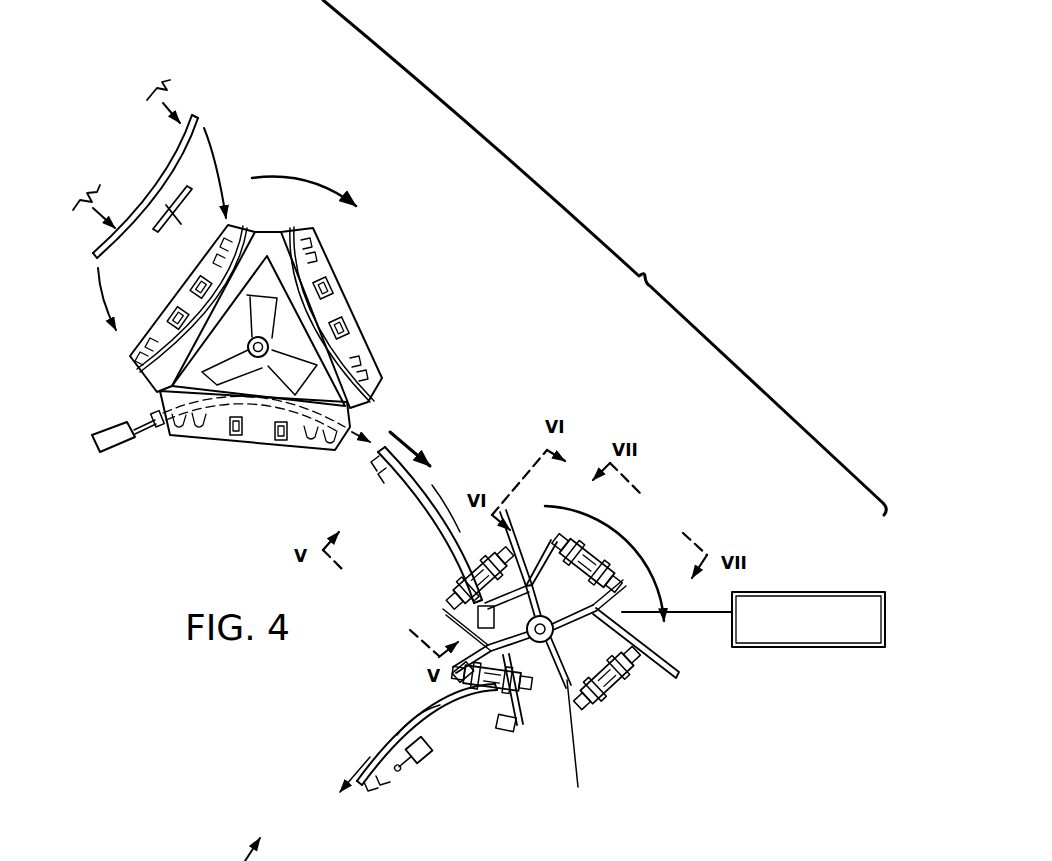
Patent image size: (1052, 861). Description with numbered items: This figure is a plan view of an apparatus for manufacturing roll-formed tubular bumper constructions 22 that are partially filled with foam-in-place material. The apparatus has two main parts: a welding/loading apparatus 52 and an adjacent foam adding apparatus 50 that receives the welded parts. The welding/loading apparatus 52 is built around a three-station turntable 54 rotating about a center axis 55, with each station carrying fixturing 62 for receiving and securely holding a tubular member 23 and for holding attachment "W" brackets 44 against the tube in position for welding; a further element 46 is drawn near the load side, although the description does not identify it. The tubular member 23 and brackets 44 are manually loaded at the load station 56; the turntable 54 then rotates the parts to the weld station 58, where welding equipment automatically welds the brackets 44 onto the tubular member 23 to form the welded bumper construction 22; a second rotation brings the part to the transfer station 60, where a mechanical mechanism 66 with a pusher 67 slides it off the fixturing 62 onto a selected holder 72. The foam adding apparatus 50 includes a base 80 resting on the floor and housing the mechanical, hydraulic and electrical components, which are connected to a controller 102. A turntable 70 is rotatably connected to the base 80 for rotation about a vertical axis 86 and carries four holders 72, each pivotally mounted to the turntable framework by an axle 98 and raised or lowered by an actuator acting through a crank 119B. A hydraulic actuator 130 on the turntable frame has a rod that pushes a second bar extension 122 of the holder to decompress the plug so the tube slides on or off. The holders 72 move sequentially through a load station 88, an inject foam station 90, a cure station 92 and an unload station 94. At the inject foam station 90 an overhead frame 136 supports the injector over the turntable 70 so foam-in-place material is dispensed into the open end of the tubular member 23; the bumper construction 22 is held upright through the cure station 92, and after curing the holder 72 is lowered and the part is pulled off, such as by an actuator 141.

The tubular bumper construction 22 is at (380, 477).
The tubular member 23 is at (202, 117).
The attachment "W" brackets 44 is at (160, 82).
The rail section 46 is at (188, 200).
The foam adding apparatus 50 is at (672, 482).
The welding/loading apparatus 52 is at (371, 171).
The three-station turntable 54 is at (380, 363).
The center axis 55 is at (255, 342).
The load station 56 is at (107, 133).
The weld station 58 is at (440, 298).
The transfer station 60 is at (254, 492).
The fixturing 62 is at (196, 275).
The mechanical mechanism 66 is at (113, 455).
The pusher 67 is at (148, 418).
The turntable 70 is at (604, 404).
The holder 72 is at (585, 556).
The base 80 is at (460, 628).
The vertical axis 86 is at (566, 622).
The load station 88 is at (398, 551).
The inject foam station 90 is at (752, 515).
The cure station 92 is at (701, 808).
The unload station 94 is at (441, 807).
The axle 98 is at (580, 562).
The controller 102 is at (810, 592).
The crank 119B is at (495, 540).
The second bar extension 122 is at (791, 855).
The hydraulic actuator 130 is at (530, 567).
The overhead frame 136 is at (683, 672).
The actuator 141 is at (426, 758).